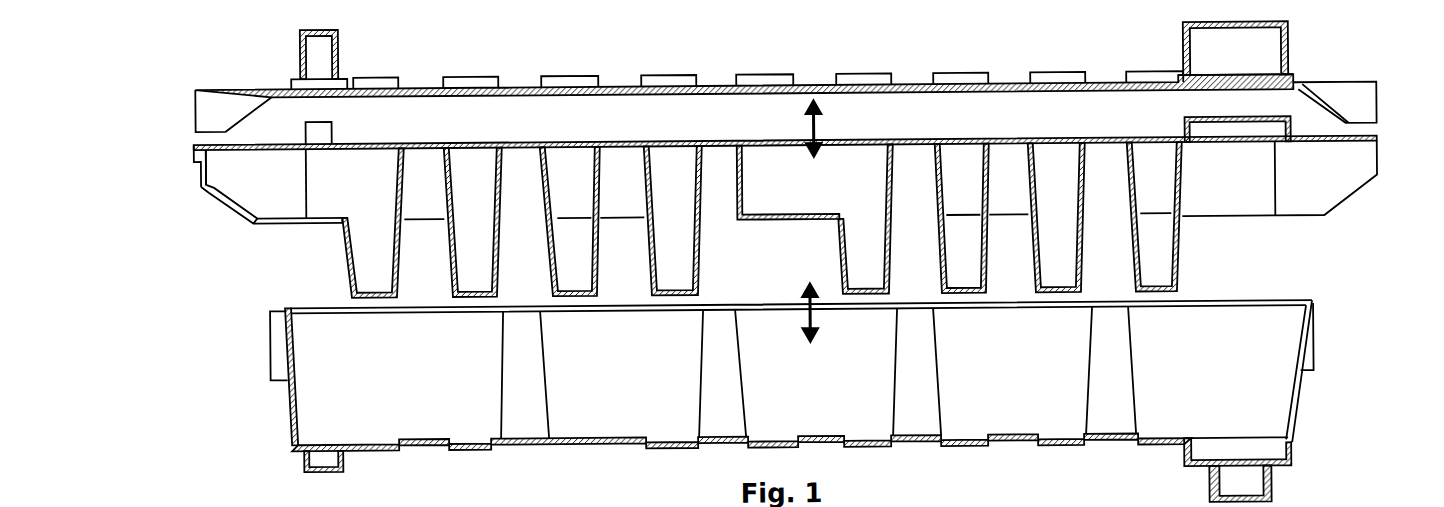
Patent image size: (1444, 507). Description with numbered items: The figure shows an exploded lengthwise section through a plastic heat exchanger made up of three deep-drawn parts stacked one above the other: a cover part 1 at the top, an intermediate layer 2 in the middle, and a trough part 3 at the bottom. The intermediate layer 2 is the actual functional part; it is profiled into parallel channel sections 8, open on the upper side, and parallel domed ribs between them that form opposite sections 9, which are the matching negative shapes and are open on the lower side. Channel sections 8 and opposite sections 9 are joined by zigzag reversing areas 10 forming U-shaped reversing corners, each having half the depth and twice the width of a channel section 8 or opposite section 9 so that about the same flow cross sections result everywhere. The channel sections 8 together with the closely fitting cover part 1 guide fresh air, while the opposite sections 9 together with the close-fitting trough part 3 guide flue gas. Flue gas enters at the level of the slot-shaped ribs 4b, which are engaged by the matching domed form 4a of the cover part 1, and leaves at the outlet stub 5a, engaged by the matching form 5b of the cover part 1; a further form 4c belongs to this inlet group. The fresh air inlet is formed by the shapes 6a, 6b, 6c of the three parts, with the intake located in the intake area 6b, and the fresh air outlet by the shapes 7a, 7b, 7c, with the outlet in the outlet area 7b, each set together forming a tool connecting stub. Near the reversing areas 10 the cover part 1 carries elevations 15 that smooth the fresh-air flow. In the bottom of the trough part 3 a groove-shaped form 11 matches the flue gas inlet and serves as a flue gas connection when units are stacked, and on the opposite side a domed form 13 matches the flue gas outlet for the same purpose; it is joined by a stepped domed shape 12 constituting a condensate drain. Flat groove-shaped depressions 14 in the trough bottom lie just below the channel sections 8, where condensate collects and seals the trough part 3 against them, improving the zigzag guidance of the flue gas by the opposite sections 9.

The cover part 1 is at (722, 63).
The intermediate layer 2 is at (234, 223).
The trough part 3 is at (270, 400).
The domed or channel-shaped form 4a is at (343, 45).
The slot-shaped ribs 4b is at (333, 128).
The centering pin 4c is at (234, 504).
The outlet stub 5a is at (1193, 127).
The domed or channel-shaped form 5b is at (1292, 48).
The fresh air inlet shape 6a is at (1366, 101).
The intake area 6b is at (1372, 167).
The fresh air inlet shape 6c is at (1314, 333).
The fresh air outlet shape 7a is at (197, 103).
The outlet area 7b is at (205, 170).
The fresh air outlet shape 7c is at (277, 312).
The channel sections 8 is at (355, 249).
The opposite sections 9 is at (412, 260).
The reversing areas 10 is at (416, 217).
The groove-shaped form 11 is at (342, 468).
The stepped domed shape 12 is at (1272, 488).
The domed form 13 is at (1300, 450).
The flat groove-shaped depressions 14 is at (466, 442).
The elevations 15 is at (653, 75).